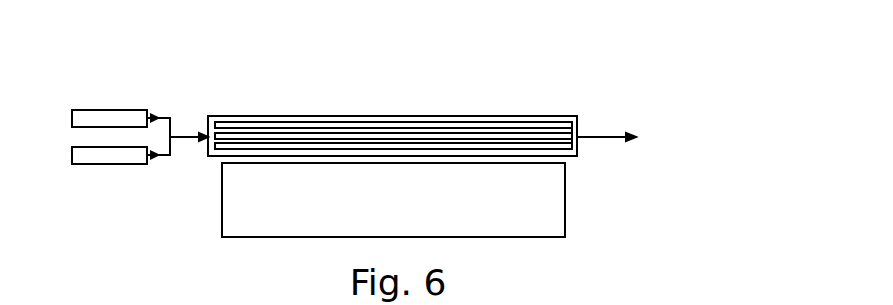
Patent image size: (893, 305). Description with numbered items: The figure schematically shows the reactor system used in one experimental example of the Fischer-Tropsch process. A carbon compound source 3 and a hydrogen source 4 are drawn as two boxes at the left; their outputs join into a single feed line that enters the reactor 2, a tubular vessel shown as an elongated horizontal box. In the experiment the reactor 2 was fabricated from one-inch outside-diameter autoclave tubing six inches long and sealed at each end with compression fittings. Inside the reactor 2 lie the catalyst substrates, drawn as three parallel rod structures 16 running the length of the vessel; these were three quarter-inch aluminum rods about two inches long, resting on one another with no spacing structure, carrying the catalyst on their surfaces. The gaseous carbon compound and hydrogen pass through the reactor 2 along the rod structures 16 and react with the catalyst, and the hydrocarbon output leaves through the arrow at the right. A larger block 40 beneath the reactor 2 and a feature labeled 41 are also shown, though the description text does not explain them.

The reactor 2 is at (392, 100).
The carbon compound source 3 is at (103, 110).
The hydrogen source 4 is at (108, 164).
The rod structure 16 is at (573, 134).
The support / heating plate 40 is at (393, 200).
The channels 41 is at (425, 116).